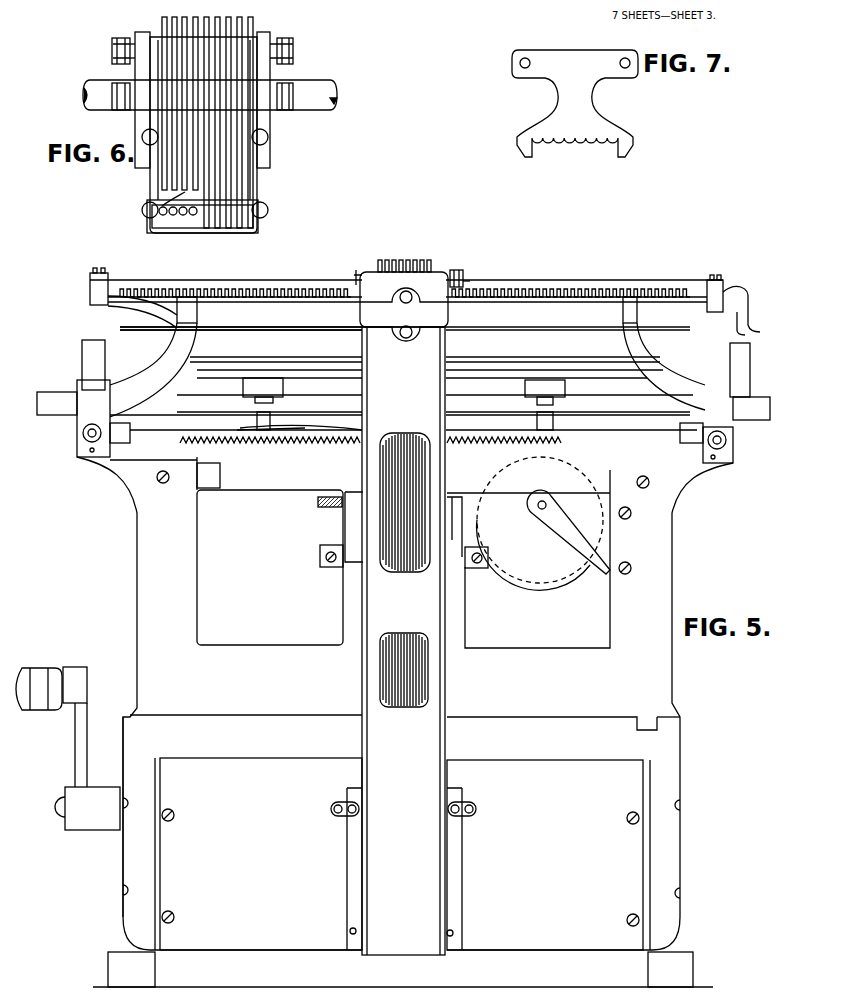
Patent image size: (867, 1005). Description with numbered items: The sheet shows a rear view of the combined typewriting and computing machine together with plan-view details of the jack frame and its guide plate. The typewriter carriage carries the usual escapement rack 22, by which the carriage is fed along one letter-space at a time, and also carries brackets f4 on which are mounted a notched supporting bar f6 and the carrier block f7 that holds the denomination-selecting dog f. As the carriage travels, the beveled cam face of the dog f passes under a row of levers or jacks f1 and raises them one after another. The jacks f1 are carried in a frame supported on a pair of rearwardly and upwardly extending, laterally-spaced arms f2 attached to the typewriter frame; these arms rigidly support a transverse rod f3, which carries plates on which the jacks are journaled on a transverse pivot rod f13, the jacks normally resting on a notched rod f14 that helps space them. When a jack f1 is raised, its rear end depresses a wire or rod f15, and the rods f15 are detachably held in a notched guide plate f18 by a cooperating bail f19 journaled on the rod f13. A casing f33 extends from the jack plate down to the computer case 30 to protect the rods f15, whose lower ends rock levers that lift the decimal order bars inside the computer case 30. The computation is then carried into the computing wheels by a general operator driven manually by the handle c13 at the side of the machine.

In FIG. 6, the jacks f1 is at (236, 42).
In FIG. 5, the jacks f1 is at (403, 262).
In FIG. 5, the denomination-selecting dog f is at (472, 271).
In FIG. 5, the laterally-spaced arms f2 is at (404, 359).
In FIG. 6, the transverse rod f3 is at (336, 108).
In FIG. 5, the transverse rod f3 is at (307, 310).
In FIG. 5, the brackets f4 is at (100, 308).
In FIG. 5, the supporting bar f6 is at (540, 300).
In FIG. 5, the carrier block f7 is at (470, 281).
In FIG. 6, the pivot rod f13 is at (295, 88).
In FIG. 5, the pivot rod f13 is at (356, 278).
In FIG. 6, the rest rod f14 is at (112, 49).
In FIG. 6, the rods f15 is at (165, 202).
In FIG. 5, the rods f15 is at (406, 708).
In FIG. 6, the notched guide plate f18 is at (270, 137).
In FIG. 7, the notched guide plate f18 is at (575, 103).
In FIG. 6, the bail f19 is at (256, 192).
In FIG. 5, the casing f33 is at (403, 834).
In FIG. 5, the escapement rack 22 is at (245, 447).
In FIG. 5, the handle c13 is at (75, 752).
In FIG. 5, the computer case 30 is at (124, 856).